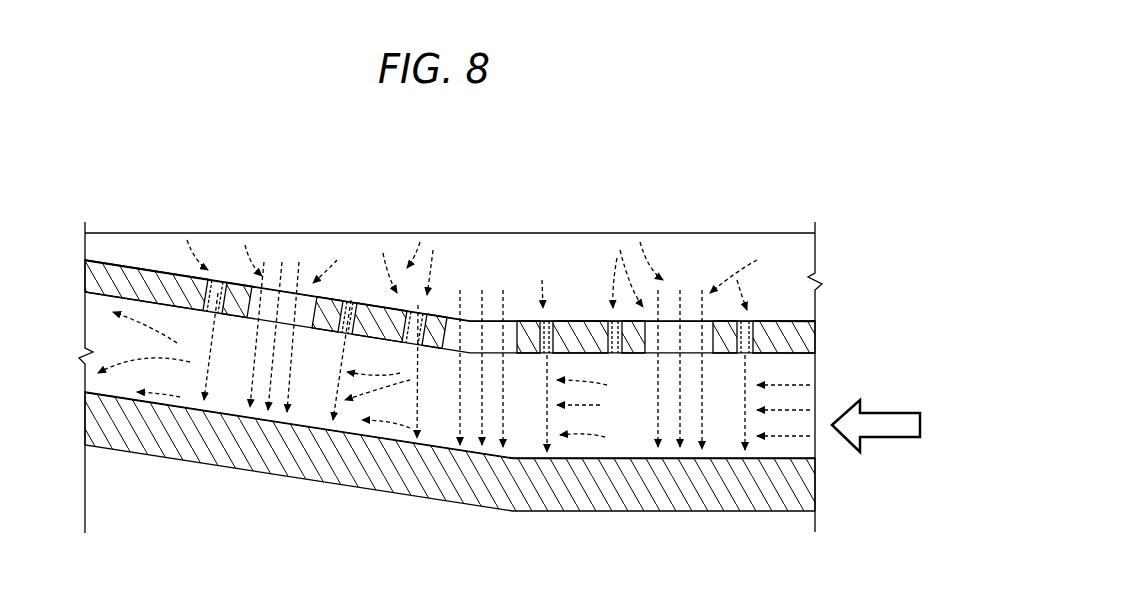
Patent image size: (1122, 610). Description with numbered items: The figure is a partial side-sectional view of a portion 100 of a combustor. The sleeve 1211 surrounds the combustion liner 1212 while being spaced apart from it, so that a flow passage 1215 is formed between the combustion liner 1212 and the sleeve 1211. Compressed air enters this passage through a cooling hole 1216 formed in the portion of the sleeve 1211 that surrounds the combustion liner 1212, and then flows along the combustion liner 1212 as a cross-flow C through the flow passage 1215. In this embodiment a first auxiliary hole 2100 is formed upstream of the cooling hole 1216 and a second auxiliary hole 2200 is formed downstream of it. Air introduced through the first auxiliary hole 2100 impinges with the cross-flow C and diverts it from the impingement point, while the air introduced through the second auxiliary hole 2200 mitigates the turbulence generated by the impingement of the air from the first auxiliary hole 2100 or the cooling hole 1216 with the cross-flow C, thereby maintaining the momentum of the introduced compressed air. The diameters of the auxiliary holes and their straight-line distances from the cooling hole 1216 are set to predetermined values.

The portion of a combustor 100 is at (135, 163).
The first auxiliary hole 2100 is at (353, 310).
The second auxiliary hole 2200 is at (226, 300).
The cooling hole 1216 is at (272, 305).
The sleeve 1211 is at (578, 322).
The combustion liner 1212 is at (447, 474).
The flow passage 1215 is at (330, 390).
The cross-flow C is at (788, 438).